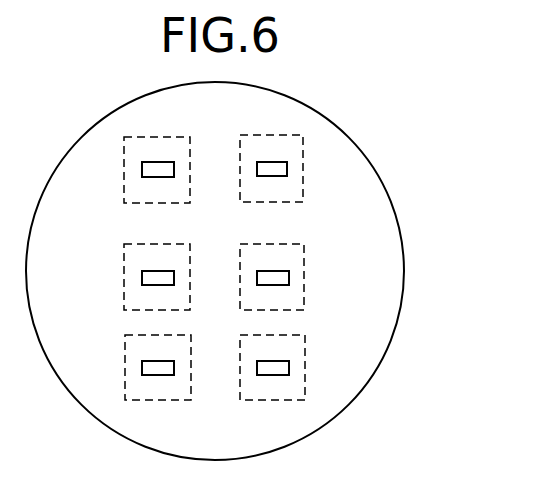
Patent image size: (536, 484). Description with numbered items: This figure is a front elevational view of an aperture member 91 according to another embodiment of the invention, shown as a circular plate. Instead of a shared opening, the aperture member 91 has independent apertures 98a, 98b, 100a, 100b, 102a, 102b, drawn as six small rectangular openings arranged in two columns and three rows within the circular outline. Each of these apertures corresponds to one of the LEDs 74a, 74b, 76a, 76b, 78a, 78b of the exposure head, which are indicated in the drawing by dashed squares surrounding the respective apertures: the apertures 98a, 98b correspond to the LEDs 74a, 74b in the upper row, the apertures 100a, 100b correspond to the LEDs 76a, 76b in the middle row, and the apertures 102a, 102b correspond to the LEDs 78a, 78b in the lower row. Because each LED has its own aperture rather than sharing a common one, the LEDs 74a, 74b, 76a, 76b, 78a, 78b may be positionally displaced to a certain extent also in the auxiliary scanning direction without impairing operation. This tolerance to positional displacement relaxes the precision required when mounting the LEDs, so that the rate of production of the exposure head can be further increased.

The aperture member 91 is at (376, 172).
The LED 74a is at (124, 202).
The LED 74b is at (303, 190).
The LED 76a is at (124, 265).
The LED 76b is at (305, 282).
The LED 78a is at (125, 338).
The LED 78b is at (305, 345).
The aperture 98a is at (157, 170).
The aperture 98b is at (268, 170).
The aperture 100a is at (160, 278).
The aperture 100b is at (288, 278).
The aperture 102a is at (158, 370).
The aperture 102b is at (268, 370).